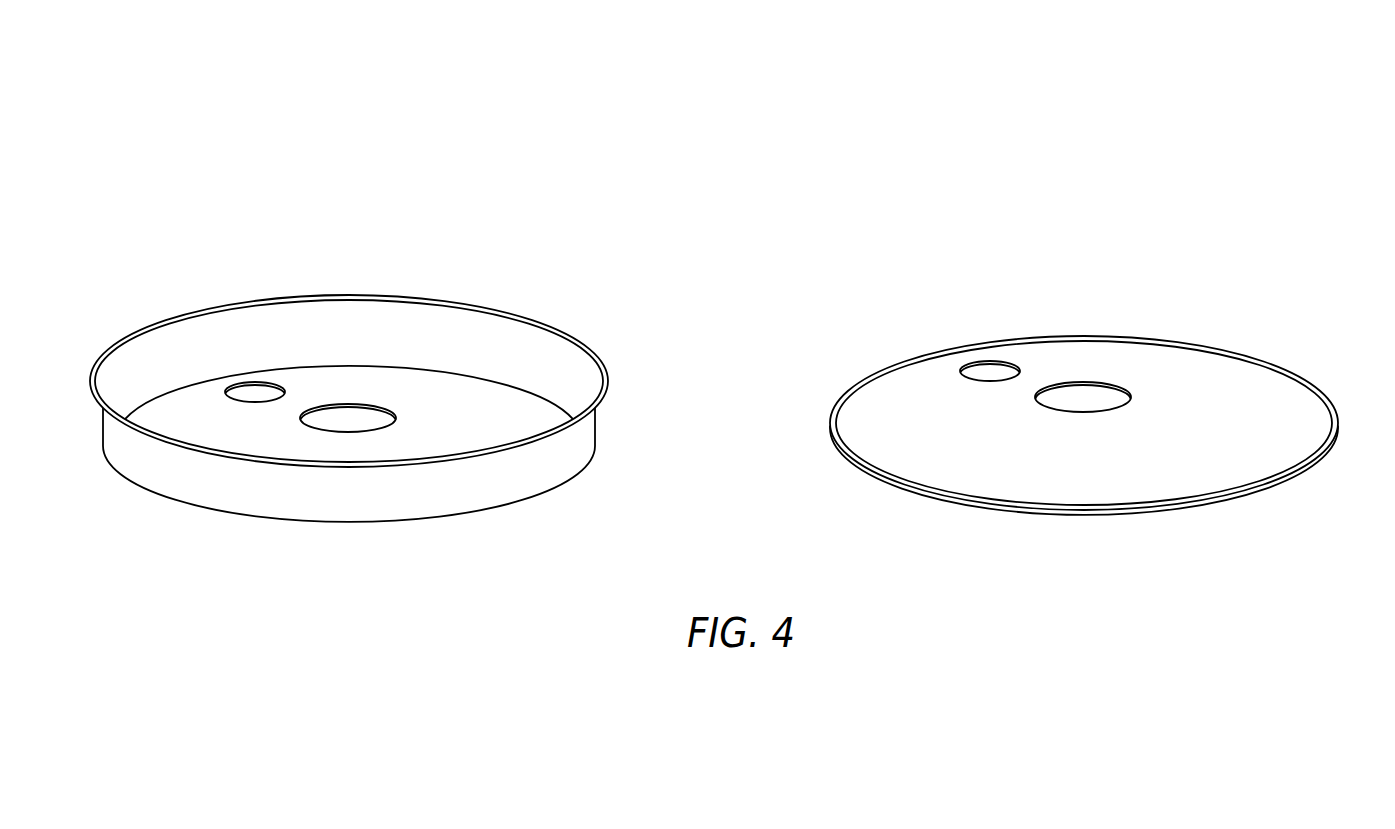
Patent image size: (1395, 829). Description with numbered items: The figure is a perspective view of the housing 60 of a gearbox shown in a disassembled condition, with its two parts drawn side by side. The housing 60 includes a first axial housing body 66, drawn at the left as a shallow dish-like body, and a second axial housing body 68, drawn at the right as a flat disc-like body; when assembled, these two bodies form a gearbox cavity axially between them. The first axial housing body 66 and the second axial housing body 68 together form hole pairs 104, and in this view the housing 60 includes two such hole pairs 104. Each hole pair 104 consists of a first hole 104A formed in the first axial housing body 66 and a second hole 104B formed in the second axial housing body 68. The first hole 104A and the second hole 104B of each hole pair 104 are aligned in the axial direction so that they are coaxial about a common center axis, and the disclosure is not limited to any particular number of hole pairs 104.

The housing 60 is at (975, 112).
The first axial housing body 66 is at (543, 365).
The second axial housing body 68 is at (1263, 395).
The hole pair 104 is at (676, 340).
The first hole 104A is at (255, 392).
The second hole 104B is at (985, 375).